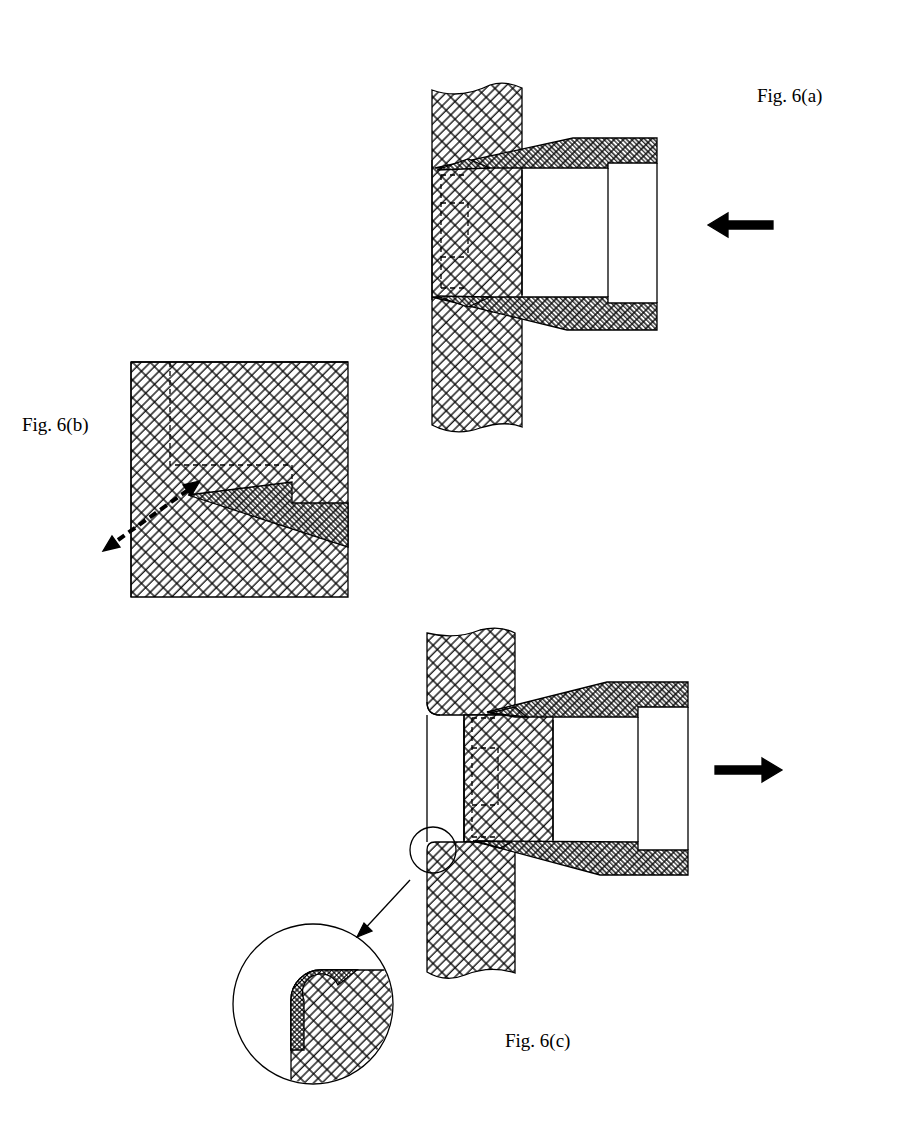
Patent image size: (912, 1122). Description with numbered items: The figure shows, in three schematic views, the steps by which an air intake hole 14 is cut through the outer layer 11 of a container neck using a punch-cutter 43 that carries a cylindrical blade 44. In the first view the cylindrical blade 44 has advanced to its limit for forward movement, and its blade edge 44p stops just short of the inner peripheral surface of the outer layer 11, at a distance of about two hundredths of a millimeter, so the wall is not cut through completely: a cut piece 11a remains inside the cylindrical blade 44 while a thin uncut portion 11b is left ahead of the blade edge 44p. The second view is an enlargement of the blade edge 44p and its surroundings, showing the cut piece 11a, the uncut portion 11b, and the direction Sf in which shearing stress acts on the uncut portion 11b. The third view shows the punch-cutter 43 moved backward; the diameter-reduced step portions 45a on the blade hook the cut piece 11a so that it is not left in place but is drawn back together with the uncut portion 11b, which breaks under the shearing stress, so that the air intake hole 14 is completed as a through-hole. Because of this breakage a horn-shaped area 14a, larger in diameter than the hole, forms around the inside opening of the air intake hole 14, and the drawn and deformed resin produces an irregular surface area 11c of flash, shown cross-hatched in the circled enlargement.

In FIG. 6A, the outer layer 11 is at (490, 370).
In FIG. 6B, the outer layer 11 is at (228, 558).
In FIG. 6C, the outer layer 11 is at (488, 920).
In FIG. 6A, the cut piece 11a is at (493, 242).
In FIG. 6B, the cut piece 11a is at (228, 393).
In FIG. 6C, the cut piece 11a is at (520, 777).
In FIG. 6A, the uncut portion 11b is at (432, 166).
In FIG. 6B, the uncut portion 11b is at (143, 380).
In FIG. 6C, the uncut portion 11b is at (463, 803).
In FIG. 6C, the irregular surface area 11c is at (313, 978).
In FIG. 6C, the air intake hole 14 is at (463, 718).
In FIG. 6C, the horn-shaped area 14a is at (440, 713).
In FIG. 6A, the punch-cutter 43 is at (640, 133).
In FIG. 6C, the punch-cutter 43 is at (665, 683).
In FIG. 6A, the cylindrical blade 44 is at (530, 155).
In FIG. 6C, the cylindrical blade 44 is at (523, 705).
In FIG. 6A, the blade edge 44p is at (441, 188).
In FIG. 6B, the blade edge 44p is at (178, 393).
In FIG. 6A, the diameter-reduced step portions 45a is at (487, 160).
In FIG. 6C, the diameter-reduced step portions 45a is at (522, 710).
In FIG. 6B, the shearing stress direction Sf is at (160, 528).